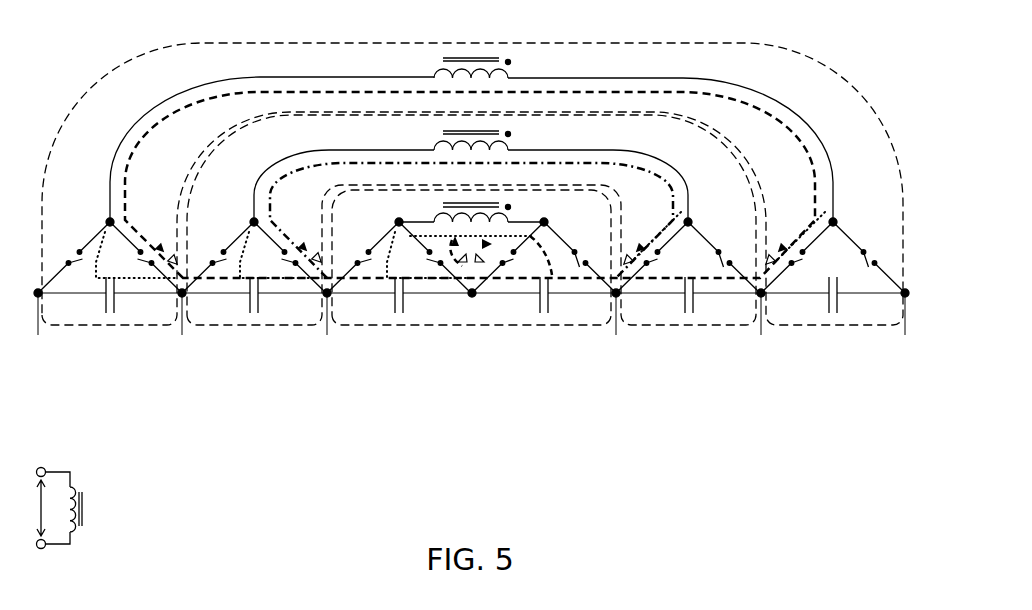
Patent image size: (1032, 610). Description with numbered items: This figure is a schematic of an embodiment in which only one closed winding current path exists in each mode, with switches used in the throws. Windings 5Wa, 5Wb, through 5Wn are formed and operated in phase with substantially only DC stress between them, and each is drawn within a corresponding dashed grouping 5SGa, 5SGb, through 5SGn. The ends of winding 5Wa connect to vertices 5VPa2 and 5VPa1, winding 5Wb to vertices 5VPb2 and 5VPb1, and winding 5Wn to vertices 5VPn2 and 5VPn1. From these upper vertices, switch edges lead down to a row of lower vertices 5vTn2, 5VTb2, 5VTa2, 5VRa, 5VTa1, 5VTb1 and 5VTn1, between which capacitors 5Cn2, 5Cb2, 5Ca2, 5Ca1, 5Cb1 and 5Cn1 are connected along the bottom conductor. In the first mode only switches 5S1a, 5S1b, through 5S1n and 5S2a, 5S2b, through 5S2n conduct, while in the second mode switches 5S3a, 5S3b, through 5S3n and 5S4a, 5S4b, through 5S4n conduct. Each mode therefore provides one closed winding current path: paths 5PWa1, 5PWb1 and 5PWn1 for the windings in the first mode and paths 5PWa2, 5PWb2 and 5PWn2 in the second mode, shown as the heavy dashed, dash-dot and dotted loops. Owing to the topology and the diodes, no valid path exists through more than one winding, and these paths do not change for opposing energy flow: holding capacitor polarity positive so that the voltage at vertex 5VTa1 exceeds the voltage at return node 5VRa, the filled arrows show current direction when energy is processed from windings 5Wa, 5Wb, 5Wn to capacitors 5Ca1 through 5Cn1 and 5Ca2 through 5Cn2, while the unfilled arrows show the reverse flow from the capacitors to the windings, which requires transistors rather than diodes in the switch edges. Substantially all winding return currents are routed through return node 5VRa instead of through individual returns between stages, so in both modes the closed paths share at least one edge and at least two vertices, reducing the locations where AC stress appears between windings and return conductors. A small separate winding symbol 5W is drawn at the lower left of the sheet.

The switch group n 5SGn is at (112, 325).
The switch group b 5SGb is at (255, 325).
The switch group a 5SGa is at (472, 325).
The winding 5Wn is at (441, 63).
The winding 5Wb is at (441, 136).
The winding 5Wa is at (441, 208).
The terminal n2 5vTn2 is at (38, 317).
The terminal b2 5VTb2 is at (182, 317).
The terminal a2 5VTa2 is at (327, 317).
The return node 5VRa is at (469, 296).
The node 5VTa1 is at (616, 317).
The terminal b1 5VTb1 is at (761, 317).
The terminal n1 5VTn1 is at (905, 317).
The winding node n2 5VPn2 is at (109, 220).
The winding node b2 5VPb2 is at (253, 220).
The winding node a2 5VPa2 is at (398, 220).
The winding node a1 5VPa1 is at (545, 220).
The winding node b1 5VPb1 is at (690, 220).
The winding node n1 5VPn1 is at (834, 220).
The switch 5S3n is at (73, 257).
The switch 5S1n is at (144, 260).
The switch 5S3b is at (217, 257).
The switch 5S1b is at (288, 260).
The switch 5S3a is at (362, 257).
The switch 5S1a is at (433, 260).
The switch 5S4a is at (510, 260).
The switch 5S2a is at (581, 257).
The switch 5S4b is at (655, 260).
The switch 5S2b is at (726, 257).
The switch 5S4n is at (799, 260).
The switch 5S2n is at (870, 257).
The winding current path 5PWn2 is at (104, 240).
The winding current path 5PWb2 is at (248, 240).
The winding current path 5PWa2 is at (393, 240).
The winding current path 5PWa1 is at (550, 240).
The winding current path 5PWb1 is at (695, 240).
The winding current path 5PWn1 is at (839, 240).
The capacitor 5Cn2 is at (115, 298).
The capacitor 5Cb2 is at (259, 298).
The capacitor 5Ca2 is at (404, 298).
The capacitor 5Ca1 is at (539, 298).
The capacitor 5Cb1 is at (684, 298).
The capacitor 5Cn1 is at (828, 298).
The source winding 5W is at (56, 508).